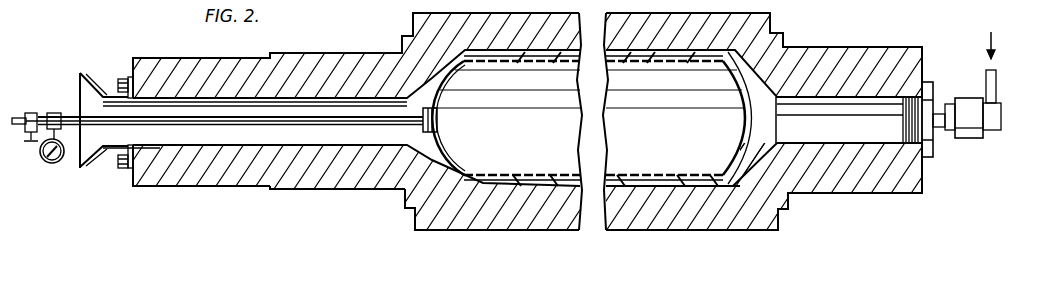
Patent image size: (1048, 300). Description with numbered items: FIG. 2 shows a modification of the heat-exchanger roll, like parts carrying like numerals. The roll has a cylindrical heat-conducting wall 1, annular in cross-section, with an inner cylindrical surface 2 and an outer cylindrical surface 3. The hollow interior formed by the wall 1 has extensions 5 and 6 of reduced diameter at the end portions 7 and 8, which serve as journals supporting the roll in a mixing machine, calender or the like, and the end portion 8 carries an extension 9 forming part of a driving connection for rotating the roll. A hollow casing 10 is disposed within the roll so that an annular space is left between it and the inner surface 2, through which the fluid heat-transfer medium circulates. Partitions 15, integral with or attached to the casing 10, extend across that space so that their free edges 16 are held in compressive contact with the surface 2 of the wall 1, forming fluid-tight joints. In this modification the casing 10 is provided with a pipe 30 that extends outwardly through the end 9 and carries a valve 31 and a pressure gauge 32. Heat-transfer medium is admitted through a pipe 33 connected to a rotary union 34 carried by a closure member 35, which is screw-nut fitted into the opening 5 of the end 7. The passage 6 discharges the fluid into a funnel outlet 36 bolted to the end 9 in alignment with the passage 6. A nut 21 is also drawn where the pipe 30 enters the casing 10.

The heat-conducting wall 1 is at (763, 213).
The inner cylindrical surface 2 is at (731, 188).
The outer cylindrical surface 3 is at (700, 231).
The extension 5 is at (883, 128).
The extension 6 is at (348, 132).
The end portion 7 is at (828, 187).
The end portion 8 is at (307, 178).
The extension 9 is at (248, 187).
The hollow casing 10 is at (482, 207).
The partitions 15 is at (538, 193).
The free edges 16 is at (620, 195).
The nozzle nut 21 is at (440, 126).
The pipe 30 is at (180, 126).
The valve 31 is at (33, 113).
The pressure gauge 32 is at (50, 165).
The pipe 33 is at (997, 72).
The rotary union 34 is at (968, 141).
The closure member 35 is at (934, 148).
The funnel outlet 36 is at (98, 162).